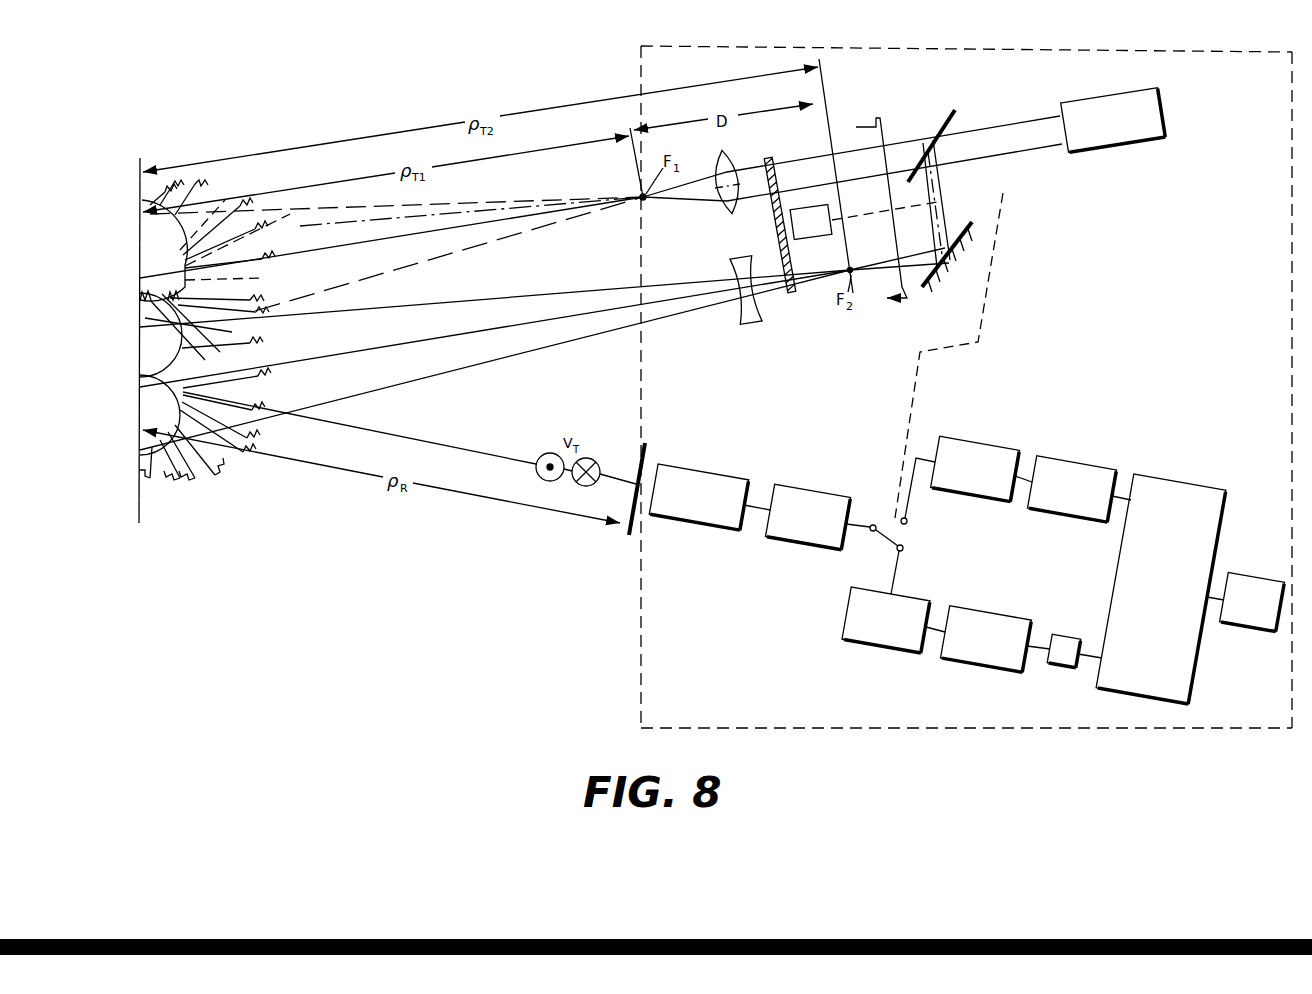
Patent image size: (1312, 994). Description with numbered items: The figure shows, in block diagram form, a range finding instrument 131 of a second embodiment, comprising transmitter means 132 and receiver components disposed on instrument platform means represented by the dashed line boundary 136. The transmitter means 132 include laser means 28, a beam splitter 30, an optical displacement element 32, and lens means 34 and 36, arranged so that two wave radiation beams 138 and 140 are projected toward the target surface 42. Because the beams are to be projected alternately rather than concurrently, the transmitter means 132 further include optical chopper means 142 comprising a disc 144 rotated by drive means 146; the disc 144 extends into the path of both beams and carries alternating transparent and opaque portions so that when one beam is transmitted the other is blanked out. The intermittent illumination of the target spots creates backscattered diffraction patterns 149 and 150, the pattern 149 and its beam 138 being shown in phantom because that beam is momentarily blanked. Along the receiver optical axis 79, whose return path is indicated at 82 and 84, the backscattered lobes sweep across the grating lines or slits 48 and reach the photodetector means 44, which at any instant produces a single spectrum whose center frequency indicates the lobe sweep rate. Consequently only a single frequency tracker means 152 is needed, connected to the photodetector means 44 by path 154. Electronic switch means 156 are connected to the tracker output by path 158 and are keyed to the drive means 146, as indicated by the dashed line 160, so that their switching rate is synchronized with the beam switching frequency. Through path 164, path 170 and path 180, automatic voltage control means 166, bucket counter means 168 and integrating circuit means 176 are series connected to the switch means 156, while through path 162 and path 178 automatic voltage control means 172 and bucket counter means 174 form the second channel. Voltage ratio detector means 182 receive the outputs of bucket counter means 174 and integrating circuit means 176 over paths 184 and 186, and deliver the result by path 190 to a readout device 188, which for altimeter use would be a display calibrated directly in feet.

The laser means 28 is at (1113, 132).
The beam splitter mirror 30 is at (940, 132).
The optical displacement element 32 is at (944, 277).
The lens means 34 is at (710, 186).
The lens means 36 is at (747, 307).
The target surface 42 is at (164, 343).
The photodetector means 44 is at (698, 484).
The lines or slits 48 is at (658, 476).
The optical axis 79 is at (359, 428).
The beam indicator 82 is at (543, 449).
The beam indicator 84 is at (596, 459).
The range finding instrument 131 is at (634, 64).
The transmitter means 132 is at (869, 100).
The instrument platform means 136 is at (966, 390).
The wave radiation beam 138 is at (396, 189).
The wave radiation beam 140 is at (495, 360).
The optical chopper means 142 is at (770, 230).
The disc 144 is at (790, 245).
The drive means 146 is at (863, 235).
The backscattered diffraction pattern 149 is at (220, 222).
The backscattered diffraction pattern 150 is at (205, 438).
The frequency tracker means 152 is at (807, 501).
The path 154 is at (763, 486).
The switch means 156 is at (879, 552).
The path 158 is at (867, 507).
The dashed line 160 is at (978, 355).
The path 162 is at (931, 492).
The path 164 is at (923, 572).
The automatic voltage control means 166 is at (886, 633).
The bucket counter means 168 is at (986, 655).
The path 170 is at (932, 653).
The automatic voltage control means 172 is at (975, 455).
The bucket counter means 174 is at (1072, 473).
The integrating circuit means 176 is at (1064, 671).
The path 178 is at (1033, 455).
The path 180 is at (1040, 668).
The voltage ratio detector means 182 is at (1161, 574).
The path 184 is at (1130, 475).
The path 186 is at (1090, 638).
The readout device 188 is at (1252, 618).
The path 190 is at (1229, 574).